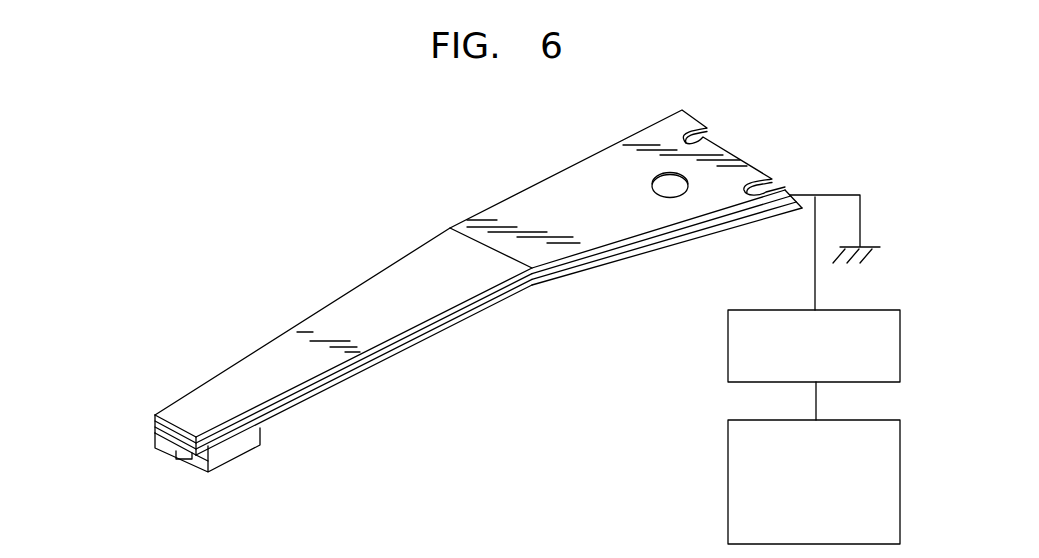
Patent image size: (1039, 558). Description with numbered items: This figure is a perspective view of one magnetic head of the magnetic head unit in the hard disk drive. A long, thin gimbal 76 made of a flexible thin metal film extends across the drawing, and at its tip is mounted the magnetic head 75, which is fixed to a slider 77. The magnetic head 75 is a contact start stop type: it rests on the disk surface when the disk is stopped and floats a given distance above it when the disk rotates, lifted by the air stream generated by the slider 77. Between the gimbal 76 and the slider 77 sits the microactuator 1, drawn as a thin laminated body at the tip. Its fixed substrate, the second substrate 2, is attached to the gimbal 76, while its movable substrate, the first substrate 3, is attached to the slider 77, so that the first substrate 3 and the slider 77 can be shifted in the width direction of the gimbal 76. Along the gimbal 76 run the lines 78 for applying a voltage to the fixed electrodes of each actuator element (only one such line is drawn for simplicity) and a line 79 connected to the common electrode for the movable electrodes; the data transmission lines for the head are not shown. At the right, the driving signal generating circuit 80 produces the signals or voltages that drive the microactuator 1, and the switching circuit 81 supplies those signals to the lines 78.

The microactuator 1 is at (149, 417).
The second substrate 2 is at (160, 412).
The first substrate 3 is at (166, 437).
The magnetic head 75 is at (178, 455).
The gimbal 76 is at (388, 293).
The slider 77 is at (232, 453).
The lines 78 is at (593, 258).
The line 79 is at (570, 257).
The driving signal generating circuit 80 is at (902, 441).
The switching circuit 81 is at (902, 333).